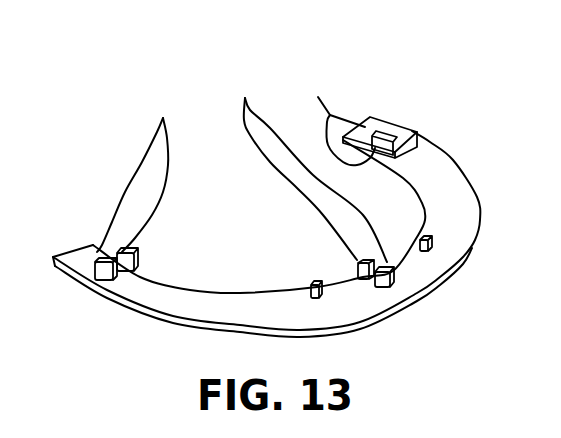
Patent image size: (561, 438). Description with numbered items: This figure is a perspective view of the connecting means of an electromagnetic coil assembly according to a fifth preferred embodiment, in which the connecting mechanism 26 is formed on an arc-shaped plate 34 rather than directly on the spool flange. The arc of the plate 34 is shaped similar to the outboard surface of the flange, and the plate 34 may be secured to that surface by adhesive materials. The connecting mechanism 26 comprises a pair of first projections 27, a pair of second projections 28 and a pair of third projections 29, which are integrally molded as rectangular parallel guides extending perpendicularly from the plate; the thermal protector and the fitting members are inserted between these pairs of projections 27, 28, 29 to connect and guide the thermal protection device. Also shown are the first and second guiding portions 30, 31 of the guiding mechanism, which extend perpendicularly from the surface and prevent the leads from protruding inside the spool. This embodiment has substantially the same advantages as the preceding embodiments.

The connecting mechanism 26 is at (325, 70).
The first projections 27 is at (163, 117).
The second projections 28 is at (318, 100).
The third projections 29 is at (245, 110).
The first guiding portion 30 is at (312, 283).
The second guiding portion 31 is at (421, 242).
The arc-shaped plate 34 is at (452, 170).